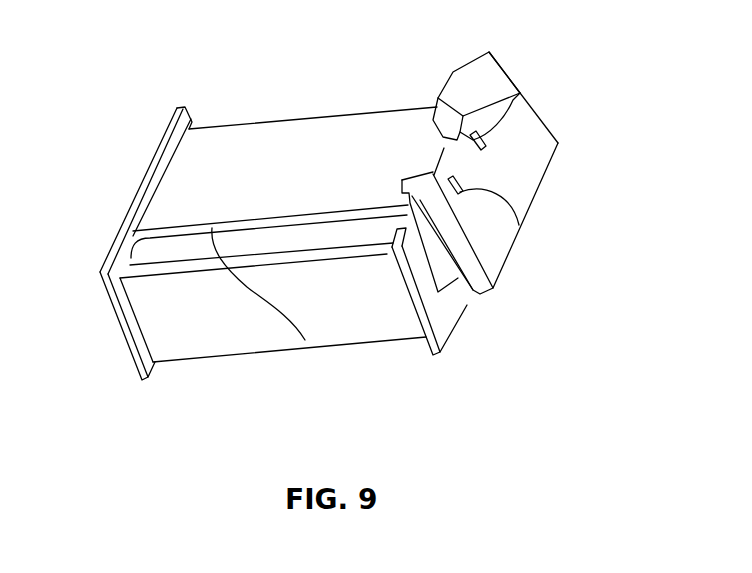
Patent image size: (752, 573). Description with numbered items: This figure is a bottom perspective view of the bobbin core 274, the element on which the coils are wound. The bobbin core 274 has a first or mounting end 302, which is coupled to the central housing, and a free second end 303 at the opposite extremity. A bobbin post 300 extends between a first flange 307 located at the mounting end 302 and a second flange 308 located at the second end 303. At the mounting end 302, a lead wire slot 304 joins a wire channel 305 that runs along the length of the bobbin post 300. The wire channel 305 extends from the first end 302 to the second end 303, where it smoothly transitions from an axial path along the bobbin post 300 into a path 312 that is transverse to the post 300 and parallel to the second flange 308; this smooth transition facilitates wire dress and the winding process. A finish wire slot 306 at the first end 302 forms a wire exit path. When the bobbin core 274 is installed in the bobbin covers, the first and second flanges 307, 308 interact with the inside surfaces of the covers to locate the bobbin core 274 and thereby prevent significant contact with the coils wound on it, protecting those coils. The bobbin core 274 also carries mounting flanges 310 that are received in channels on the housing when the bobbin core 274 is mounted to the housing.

The bobbin core 274 is at (158, 44).
The bobbin post 300 is at (288, 110).
The first or mounting end 302 is at (571, 166).
The free second end 303 is at (118, 174).
The lead wire slot 304 is at (462, 192).
The wire channel 305 is at (305, 340).
The finish wire slot 306 is at (490, 136).
The first flange 307 is at (437, 356).
The second flange 308 is at (143, 382).
The mounting flanges 310 is at (538, 194).
The transverse path 312 is at (128, 257).